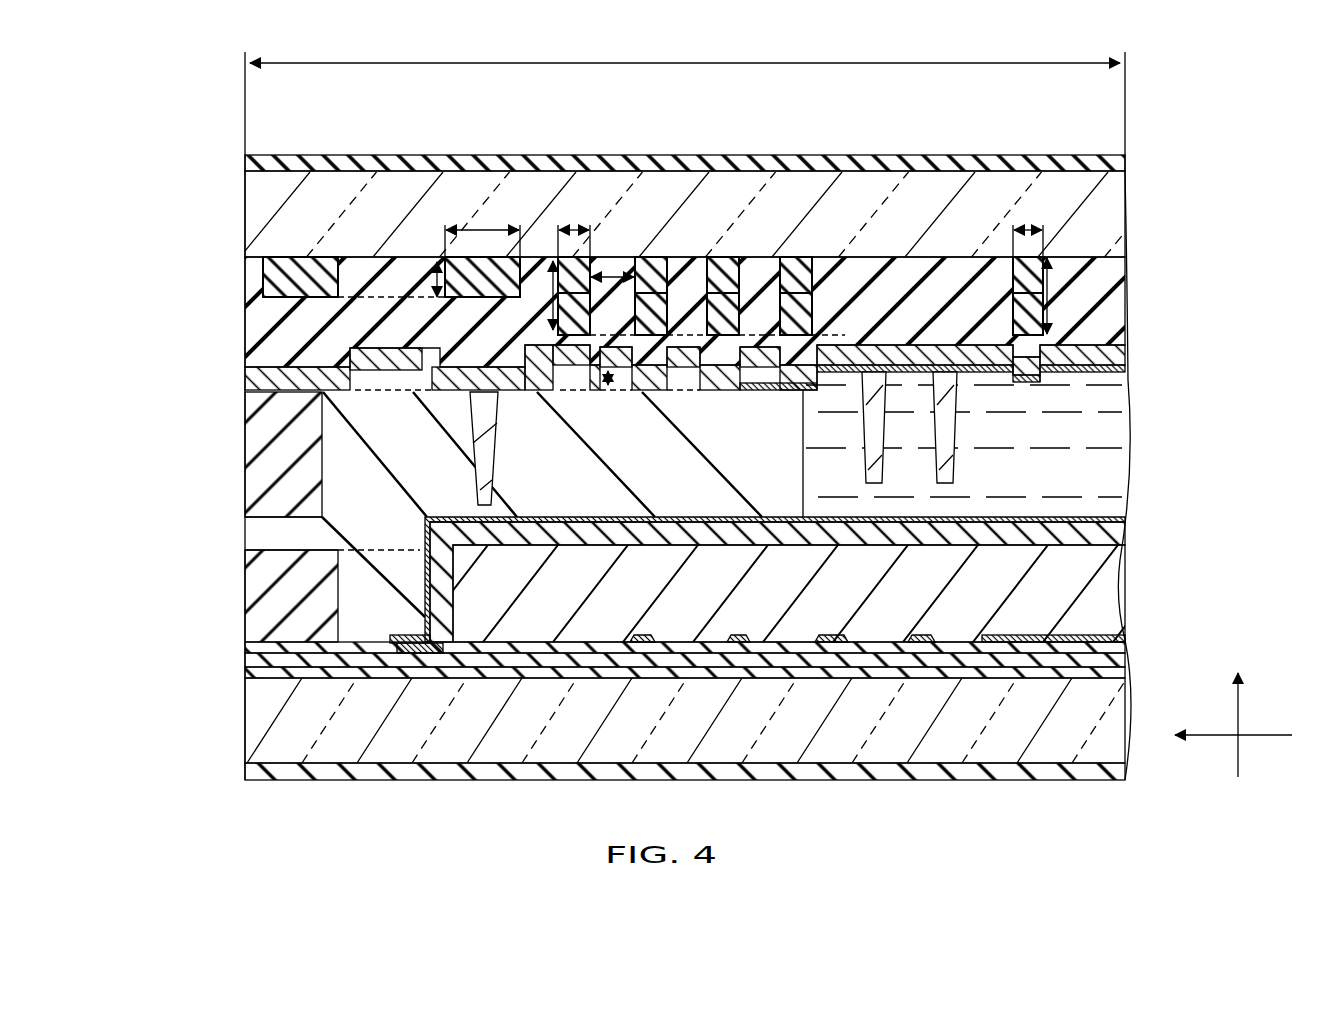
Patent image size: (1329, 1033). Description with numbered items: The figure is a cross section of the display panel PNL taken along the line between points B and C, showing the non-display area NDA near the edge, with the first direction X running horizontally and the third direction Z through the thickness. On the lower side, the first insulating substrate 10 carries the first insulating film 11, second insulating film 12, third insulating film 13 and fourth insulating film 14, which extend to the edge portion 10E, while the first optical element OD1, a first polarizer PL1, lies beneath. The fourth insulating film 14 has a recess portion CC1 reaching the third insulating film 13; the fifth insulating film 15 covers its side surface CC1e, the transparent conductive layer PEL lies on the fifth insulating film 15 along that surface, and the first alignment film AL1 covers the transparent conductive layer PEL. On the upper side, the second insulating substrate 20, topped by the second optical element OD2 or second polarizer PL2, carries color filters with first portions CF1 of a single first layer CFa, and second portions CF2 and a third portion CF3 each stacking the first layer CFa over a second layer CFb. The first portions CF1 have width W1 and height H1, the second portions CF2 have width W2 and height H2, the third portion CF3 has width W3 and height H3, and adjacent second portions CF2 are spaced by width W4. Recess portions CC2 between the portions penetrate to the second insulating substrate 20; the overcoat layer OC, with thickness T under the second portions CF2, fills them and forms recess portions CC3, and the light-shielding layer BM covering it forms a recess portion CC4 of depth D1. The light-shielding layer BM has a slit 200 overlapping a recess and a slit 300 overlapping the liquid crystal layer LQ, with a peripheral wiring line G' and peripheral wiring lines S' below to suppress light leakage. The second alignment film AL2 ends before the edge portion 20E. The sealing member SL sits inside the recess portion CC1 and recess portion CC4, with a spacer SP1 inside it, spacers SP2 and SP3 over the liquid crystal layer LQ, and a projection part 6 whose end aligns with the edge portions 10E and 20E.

The line B-C end B is at (244, 402).
The line B-C end C is at (1124, 402).
The non-display area NDA is at (670, 63).
The display panel PNL is at (1168, 138).
The second optical element OD2 is at (637, 172).
The second polarizer PL2 is at (252, 164).
The second insulating substrate 20 is at (250, 215).
The edge portion of the second insulating substrate 20E is at (243, 243).
The overcoat layer OC is at (252, 345).
The light-shielding layer BM is at (252, 380).
The projection part 6 is at (252, 455).
The sealing member SL is at (252, 535).
The fourth insulating film 14 is at (252, 585).
The third insulating film 13 is at (252, 645).
The second insulating film 12 is at (252, 660).
The first insulating film 11 is at (252, 674).
The edge portion of the first insulating substrate 10E is at (243, 714).
The first insulating substrate 10 is at (252, 748).
The first optical element OD1 is at (637, 784).
The first polarizer PL1 is at (252, 770).
The first portions of the color filters CF1 is at (301, 254).
The second portions of the color filters CF2 is at (573, 254).
The third portion of the color filters CF3 is at (1027, 254).
The first layer CFa is at (503, 267).
The second layer CFb is at (650, 368).
The slit 200 is at (412, 355).
The slit 300 is at (1040, 357).
The second alignment film AL2 is at (1120, 372).
The first alignment film AL1 is at (1120, 518).
The transparent conductive layer PEL is at (1120, 535).
The fifth insulating film 15 is at (1120, 565).
The liquid crystal layer LQ is at (1120, 428).
The spacer SP1 is at (493, 495).
The spacer SP2 is at (863, 457).
The spacer SP3 is at (953, 455).
The recess portion CC1 is at (384, 545).
The side surface of the recess portion CC1e is at (441, 597).
The recess portions CC2 is at (352, 312).
The recess portions CC3 is at (372, 373).
The recess portion CC4 is at (410, 395).
The height of the first portions H1 is at (434, 275).
The height of the second portions H2 is at (552, 338).
The height of the third portion H3 is at (1050, 328).
The width of the first portions W1 is at (483, 227).
The width of the second portions W2 is at (563, 227).
The width of the third portion W3 is at (1033, 225).
The width between adjacent second portions W4 is at (610, 273).
The thickness of the overcoat layer T is at (574, 392).
The depth of the recess portion D1 is at (606, 388).
The peripheral wiring line G' is at (416, 730).
The peripheral wiring lines S' is at (876, 725).
The third direction Z is at (1238, 709).
The first direction X is at (1222, 735).